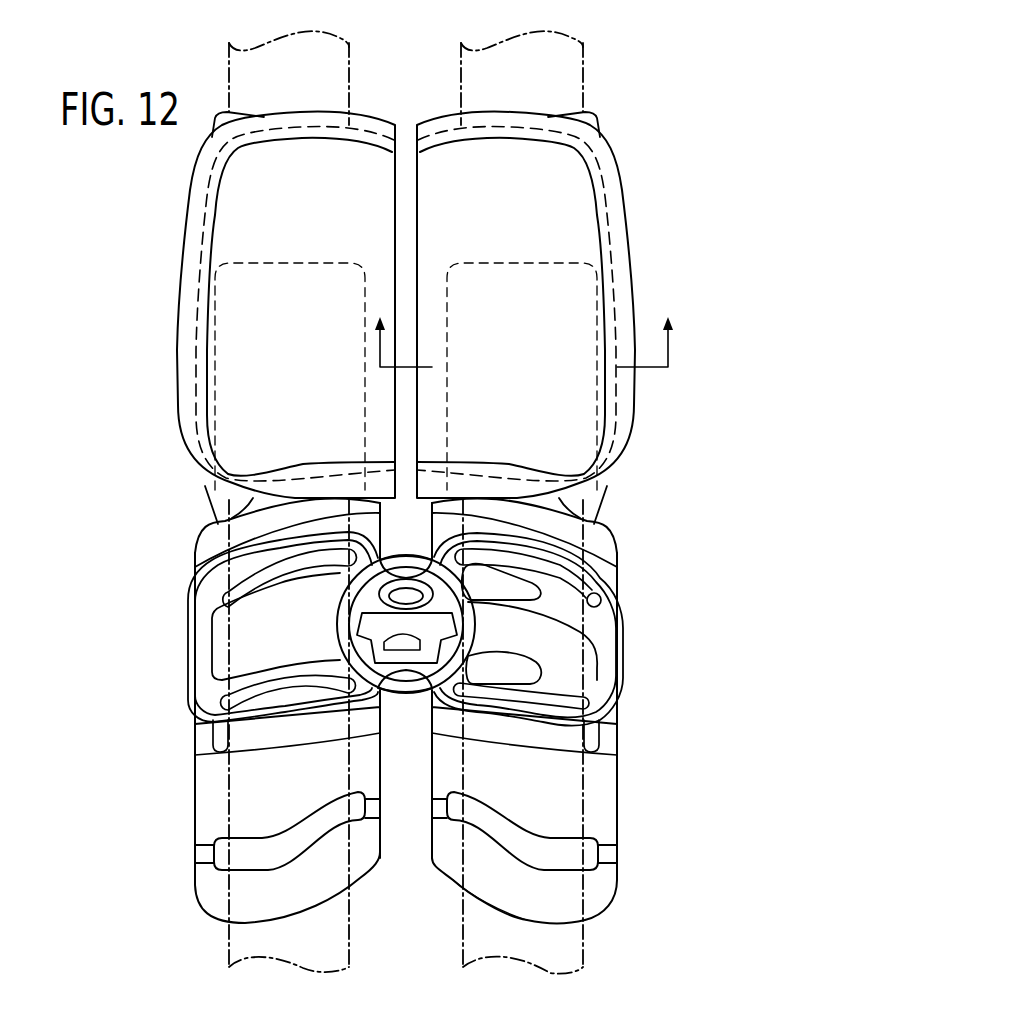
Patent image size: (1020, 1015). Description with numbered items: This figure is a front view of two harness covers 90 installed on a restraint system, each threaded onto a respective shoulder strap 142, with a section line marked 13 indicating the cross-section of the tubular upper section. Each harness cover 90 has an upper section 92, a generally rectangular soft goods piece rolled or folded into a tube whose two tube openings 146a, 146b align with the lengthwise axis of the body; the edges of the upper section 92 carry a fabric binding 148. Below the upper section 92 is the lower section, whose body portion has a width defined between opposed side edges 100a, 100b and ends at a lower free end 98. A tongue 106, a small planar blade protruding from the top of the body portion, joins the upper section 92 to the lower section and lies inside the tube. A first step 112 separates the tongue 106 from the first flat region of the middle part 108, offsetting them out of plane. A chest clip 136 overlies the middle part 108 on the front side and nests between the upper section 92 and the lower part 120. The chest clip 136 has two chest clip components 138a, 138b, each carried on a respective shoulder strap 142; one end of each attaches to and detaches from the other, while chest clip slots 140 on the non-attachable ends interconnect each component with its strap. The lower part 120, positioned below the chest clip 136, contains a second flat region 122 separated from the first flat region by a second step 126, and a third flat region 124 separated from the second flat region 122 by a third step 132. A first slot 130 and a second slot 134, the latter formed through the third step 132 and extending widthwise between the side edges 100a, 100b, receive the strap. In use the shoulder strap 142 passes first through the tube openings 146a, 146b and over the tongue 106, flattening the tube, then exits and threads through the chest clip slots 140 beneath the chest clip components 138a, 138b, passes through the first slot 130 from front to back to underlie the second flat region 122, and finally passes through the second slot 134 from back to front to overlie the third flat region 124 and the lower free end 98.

The harness cover 90 is at (201, 62).
The upper section 92 is at (574, 207).
The lower free end 98 is at (523, 920).
The side edge 100a is at (195, 798).
The side edge 100b is at (384, 753).
The tongue 106 is at (299, 302).
The middle part 108 is at (730, 462).
The first step 112 is at (593, 553).
The lower part 120 is at (722, 740).
The second flat region 122 is at (602, 825).
The third flat region 124 is at (558, 892).
The second step 126 is at (607, 753).
The first slot 130 is at (600, 740).
The third step 132 is at (607, 853).
The second slot 134 is at (473, 820).
The chest clip 136 is at (264, 640).
The chest clip component 138a is at (223, 663).
The chest clip component 138b is at (577, 657).
The chest clip slots 140 is at (214, 595).
The shoulder strap 142 is at (345, 57).
The tube opening 146a is at (307, 111).
The tube opening 146b is at (229, 512).
The fabric binding 148 is at (187, 404).
The section line 13- 13 is at (527, 328).